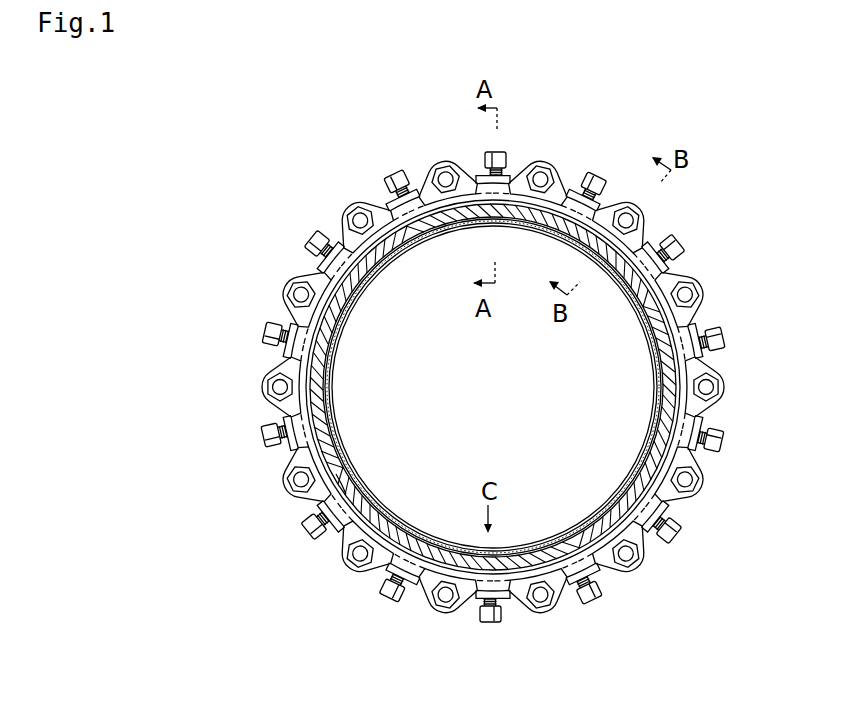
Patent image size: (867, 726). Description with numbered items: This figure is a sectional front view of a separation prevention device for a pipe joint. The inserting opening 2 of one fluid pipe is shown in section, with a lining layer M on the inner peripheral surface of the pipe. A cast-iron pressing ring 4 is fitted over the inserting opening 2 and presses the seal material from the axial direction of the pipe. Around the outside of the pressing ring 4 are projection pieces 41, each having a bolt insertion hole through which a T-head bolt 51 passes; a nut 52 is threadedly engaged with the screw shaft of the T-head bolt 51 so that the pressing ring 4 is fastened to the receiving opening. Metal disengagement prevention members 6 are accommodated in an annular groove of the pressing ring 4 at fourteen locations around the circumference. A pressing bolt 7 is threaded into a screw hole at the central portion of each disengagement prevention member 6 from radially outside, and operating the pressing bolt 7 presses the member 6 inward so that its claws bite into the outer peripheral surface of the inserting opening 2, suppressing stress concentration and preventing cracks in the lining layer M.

The inserting opening 2 is at (333, 342).
The pressing ring 4 is at (493, 378).
The disengagement prevention member 6 is at (380, 269).
The pressing bolt 7 is at (489, 151).
The projection piece 41 is at (652, 221).
The T-head bolt 51 is at (644, 214).
The nut 52 is at (622, 207).
The lining layer M is at (350, 474).